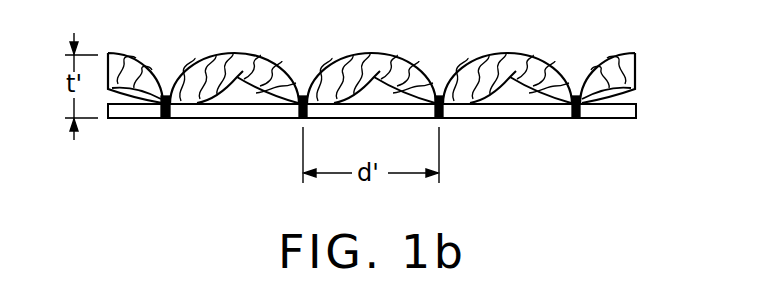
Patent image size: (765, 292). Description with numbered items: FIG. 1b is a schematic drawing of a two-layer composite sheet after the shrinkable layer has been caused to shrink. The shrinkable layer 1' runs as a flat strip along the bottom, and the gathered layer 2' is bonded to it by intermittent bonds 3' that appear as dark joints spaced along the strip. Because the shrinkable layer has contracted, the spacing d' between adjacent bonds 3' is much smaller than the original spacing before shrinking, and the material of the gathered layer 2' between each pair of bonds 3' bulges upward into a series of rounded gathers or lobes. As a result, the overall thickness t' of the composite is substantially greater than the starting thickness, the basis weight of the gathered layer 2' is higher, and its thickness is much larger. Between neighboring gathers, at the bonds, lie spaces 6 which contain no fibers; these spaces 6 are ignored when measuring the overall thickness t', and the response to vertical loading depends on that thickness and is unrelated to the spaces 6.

The shrinkable layer 1' is at (372, 130).
The gathered layer 2' is at (371, 59).
The intermittent bonds 3' is at (390, 132).
The spaces between the gathers 6 is at (164, 81).